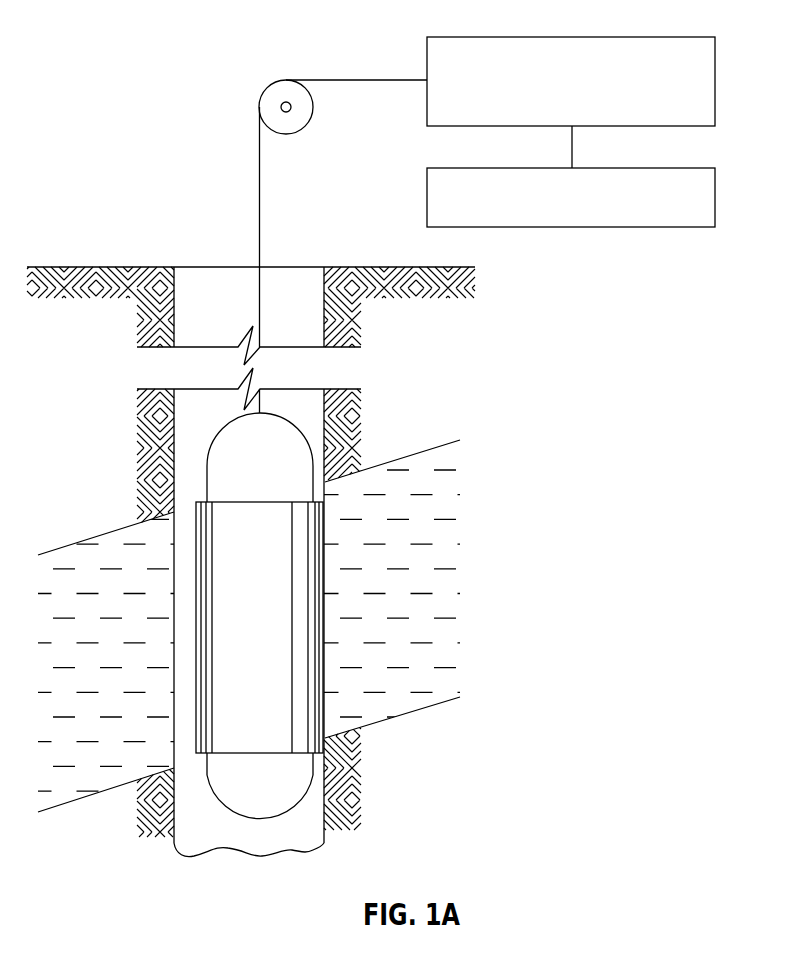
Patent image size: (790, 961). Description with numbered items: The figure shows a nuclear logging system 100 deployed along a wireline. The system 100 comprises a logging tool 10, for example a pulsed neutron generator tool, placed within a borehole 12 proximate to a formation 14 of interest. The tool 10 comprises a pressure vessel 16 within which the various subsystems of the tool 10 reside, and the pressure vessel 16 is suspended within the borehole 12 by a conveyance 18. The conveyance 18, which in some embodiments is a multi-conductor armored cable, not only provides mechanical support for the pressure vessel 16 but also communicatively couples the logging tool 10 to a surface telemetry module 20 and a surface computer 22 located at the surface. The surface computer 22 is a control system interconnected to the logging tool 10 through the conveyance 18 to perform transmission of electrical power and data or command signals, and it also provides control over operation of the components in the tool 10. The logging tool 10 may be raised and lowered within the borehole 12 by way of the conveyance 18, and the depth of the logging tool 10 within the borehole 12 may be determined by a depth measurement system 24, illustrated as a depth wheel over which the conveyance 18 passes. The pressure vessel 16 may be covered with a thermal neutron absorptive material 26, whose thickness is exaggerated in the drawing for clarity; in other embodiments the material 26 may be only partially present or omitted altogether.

The nuclear logging system 100 is at (167, 40).
The logging tool 10 is at (197, 443).
The borehole 12 is at (235, 310).
The formation 14 is at (388, 598).
The pressure vessel 16 is at (273, 476).
The conveyance 18 is at (259, 193).
The surface telemetry module 20 is at (662, 36).
The surface computer 22 is at (662, 168).
The depth measurement system 24 is at (307, 125).
The thermal neutron absorptive material 26 is at (273, 653).